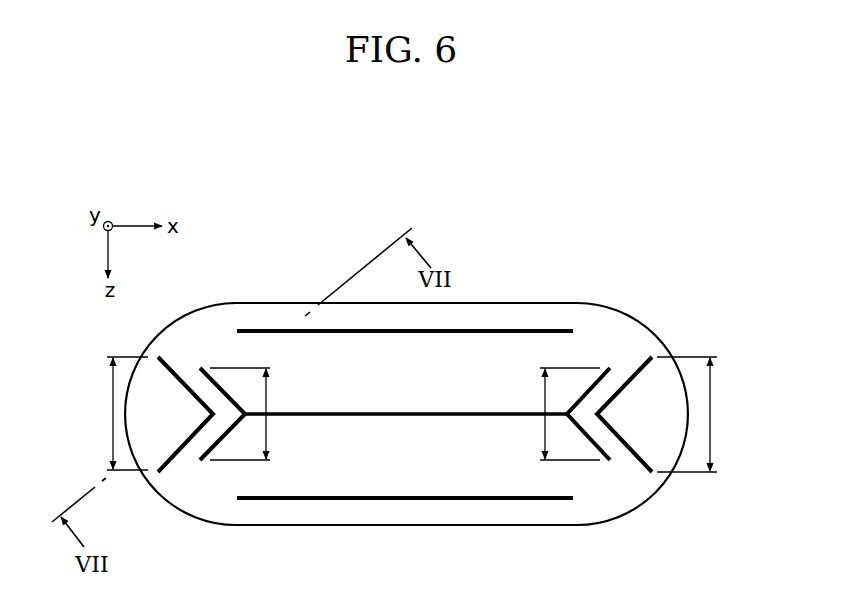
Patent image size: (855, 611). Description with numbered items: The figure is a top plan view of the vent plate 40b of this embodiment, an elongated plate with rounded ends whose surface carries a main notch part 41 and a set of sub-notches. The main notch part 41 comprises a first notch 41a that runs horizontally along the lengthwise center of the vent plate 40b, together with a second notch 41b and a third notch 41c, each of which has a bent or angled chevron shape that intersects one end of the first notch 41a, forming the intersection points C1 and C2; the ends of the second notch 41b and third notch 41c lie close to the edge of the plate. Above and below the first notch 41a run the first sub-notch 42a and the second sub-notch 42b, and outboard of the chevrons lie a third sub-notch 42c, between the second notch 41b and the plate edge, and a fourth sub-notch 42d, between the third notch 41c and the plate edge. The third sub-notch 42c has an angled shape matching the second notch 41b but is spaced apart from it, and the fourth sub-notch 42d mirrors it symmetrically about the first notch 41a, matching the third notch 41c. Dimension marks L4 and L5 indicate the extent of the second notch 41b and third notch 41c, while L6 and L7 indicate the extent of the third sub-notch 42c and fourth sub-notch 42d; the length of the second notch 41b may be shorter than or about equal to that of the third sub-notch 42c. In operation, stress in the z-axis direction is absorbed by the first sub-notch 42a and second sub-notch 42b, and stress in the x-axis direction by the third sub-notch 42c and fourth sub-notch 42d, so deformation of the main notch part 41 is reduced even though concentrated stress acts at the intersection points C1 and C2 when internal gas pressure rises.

The vent plate 40b is at (388, 177).
The main notch part 41 is at (343, 420).
The first notch 41a is at (420, 417).
The second notch 41b is at (222, 440).
The third notch 41c is at (585, 440).
The first sub-notch 42a is at (398, 335).
The second sub-notch 42b is at (415, 500).
The third sub-notch 42c is at (173, 452).
The fourth sub-notch 42d is at (640, 455).
The intersection point C1 is at (243, 420).
The intersection point C2 is at (578, 420).
The width of left inner chevron L4 is at (253, 414).
The width of right inner chevron L5 is at (557, 414).
The width of left outer chevron L6 is at (114, 413).
The width of right outer chevron L7 is at (699, 414).